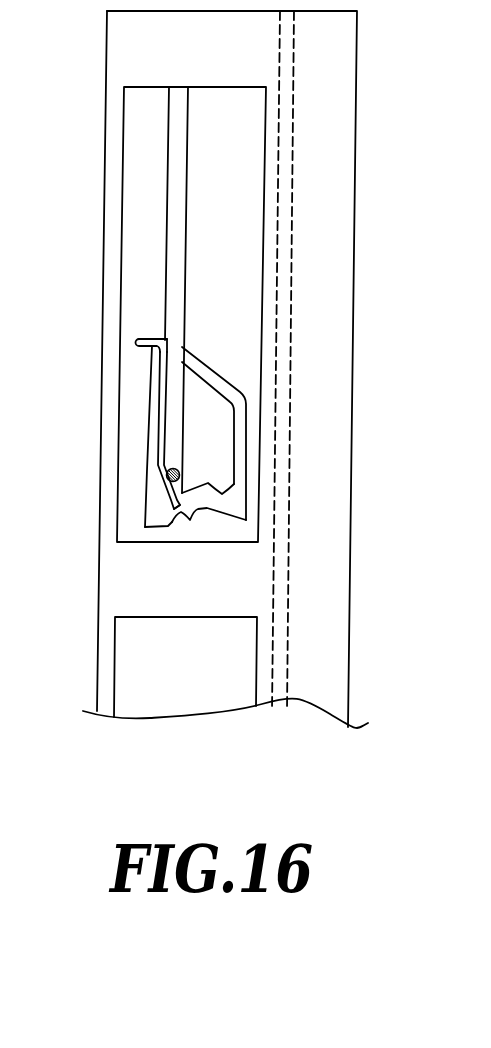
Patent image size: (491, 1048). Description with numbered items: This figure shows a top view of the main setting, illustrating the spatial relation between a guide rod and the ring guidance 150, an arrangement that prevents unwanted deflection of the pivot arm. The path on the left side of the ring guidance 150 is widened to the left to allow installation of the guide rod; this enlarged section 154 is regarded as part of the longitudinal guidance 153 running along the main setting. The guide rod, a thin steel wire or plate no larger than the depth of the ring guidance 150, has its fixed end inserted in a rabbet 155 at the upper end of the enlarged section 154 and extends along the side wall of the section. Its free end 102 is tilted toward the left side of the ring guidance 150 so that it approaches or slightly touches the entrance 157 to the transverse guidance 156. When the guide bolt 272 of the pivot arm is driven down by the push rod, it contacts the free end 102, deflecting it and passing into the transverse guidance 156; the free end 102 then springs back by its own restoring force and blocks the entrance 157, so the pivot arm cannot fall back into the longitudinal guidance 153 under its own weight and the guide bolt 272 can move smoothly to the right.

The ring guidance 150 is at (223, 348).
The longitudinal guidance 153 is at (177, 135).
The enlarged section 154 is at (147, 428).
The rabbet 155 is at (143, 340).
The free end 102 is at (177, 507).
The transverse guidance 156 is at (192, 505).
The entrance 157 is at (175, 502).
The guide bolt 272 is at (167, 462).